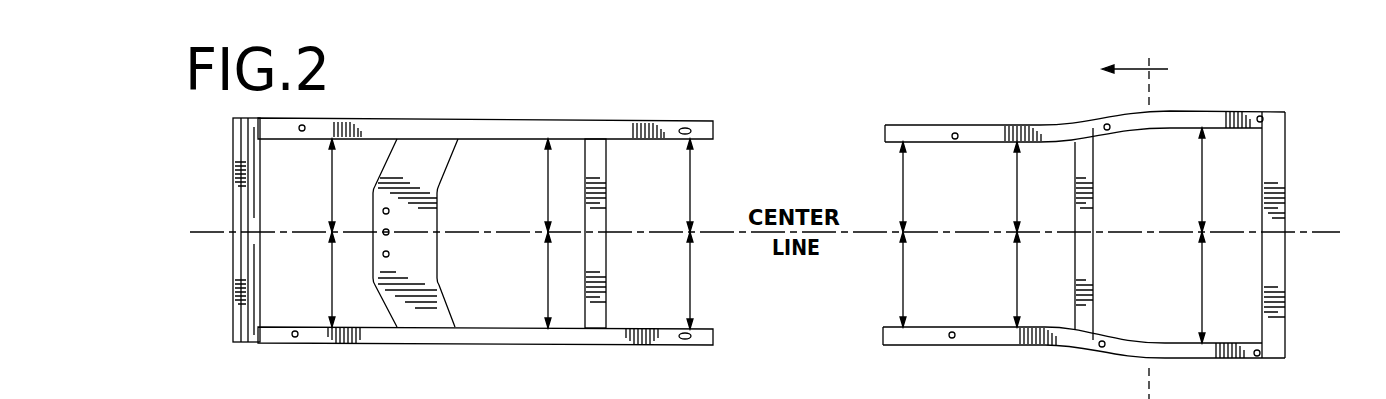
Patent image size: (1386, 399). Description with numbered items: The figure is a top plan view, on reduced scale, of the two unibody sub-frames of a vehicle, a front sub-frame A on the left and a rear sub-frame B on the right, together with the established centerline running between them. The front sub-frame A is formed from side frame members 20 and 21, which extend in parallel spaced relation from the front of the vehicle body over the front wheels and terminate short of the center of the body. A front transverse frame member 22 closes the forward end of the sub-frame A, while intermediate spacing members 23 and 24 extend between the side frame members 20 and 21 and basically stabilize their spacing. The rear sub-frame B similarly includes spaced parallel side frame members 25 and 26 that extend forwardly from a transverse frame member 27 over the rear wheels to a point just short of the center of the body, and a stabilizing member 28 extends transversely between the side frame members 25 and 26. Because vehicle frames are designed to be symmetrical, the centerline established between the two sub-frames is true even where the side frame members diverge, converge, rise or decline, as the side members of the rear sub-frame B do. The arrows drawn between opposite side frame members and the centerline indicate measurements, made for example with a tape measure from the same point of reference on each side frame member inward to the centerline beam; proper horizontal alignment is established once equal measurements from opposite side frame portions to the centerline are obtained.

The side frame member 20 is at (515, 119).
The side frame member 21 is at (504, 345).
The front transverse frame member 22 is at (232, 258).
The intermediate spacing member 23 is at (439, 221).
The intermediate spacing member 24 is at (607, 215).
The side frame member 25 is at (1033, 125).
The side frame member 26 is at (1090, 353).
The transverse frame member 27 is at (1286, 190).
The stabilizing member 28 is at (1094, 210).
The front sub-frame A is at (421, 116).
The rear sub-frame B is at (1200, 103).